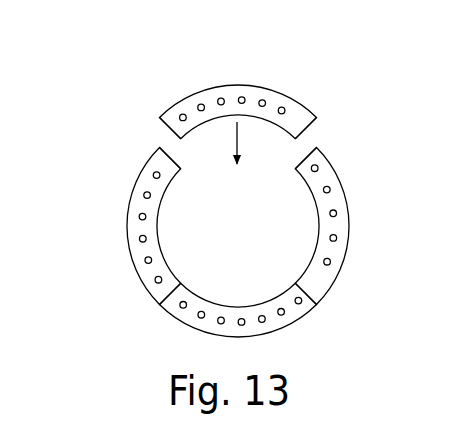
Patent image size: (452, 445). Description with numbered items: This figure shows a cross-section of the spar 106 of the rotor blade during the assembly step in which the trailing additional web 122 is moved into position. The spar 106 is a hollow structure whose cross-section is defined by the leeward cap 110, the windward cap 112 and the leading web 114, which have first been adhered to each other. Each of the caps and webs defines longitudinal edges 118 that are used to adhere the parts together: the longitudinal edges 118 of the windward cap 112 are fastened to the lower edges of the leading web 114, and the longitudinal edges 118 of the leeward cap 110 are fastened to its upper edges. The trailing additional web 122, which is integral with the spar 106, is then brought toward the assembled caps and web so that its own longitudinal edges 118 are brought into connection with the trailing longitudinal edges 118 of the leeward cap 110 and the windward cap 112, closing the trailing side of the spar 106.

The spar 106 is at (350, 69).
The leeward cap 110 is at (133, 224).
The windward cap 112 is at (335, 198).
The leading web 114 is at (297, 308).
The longitudinal edges 118 is at (165, 127).
The trailing additional web 122 is at (275, 103).